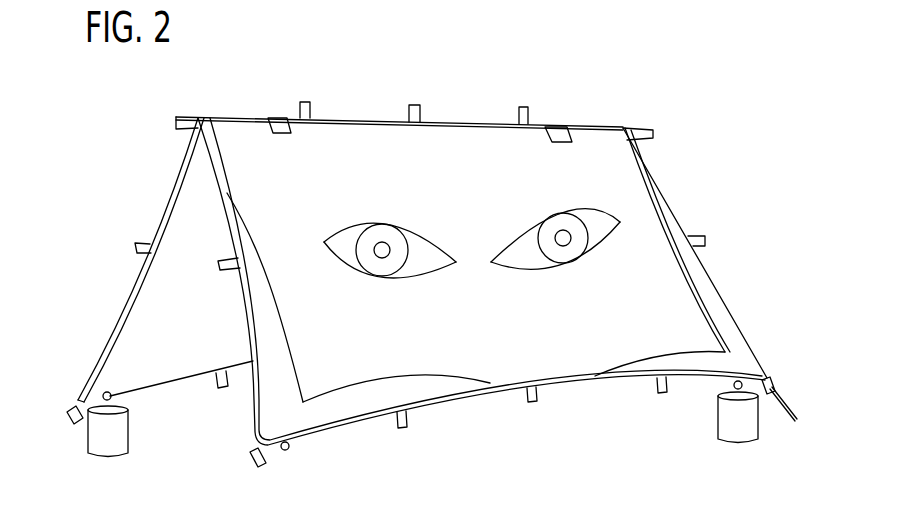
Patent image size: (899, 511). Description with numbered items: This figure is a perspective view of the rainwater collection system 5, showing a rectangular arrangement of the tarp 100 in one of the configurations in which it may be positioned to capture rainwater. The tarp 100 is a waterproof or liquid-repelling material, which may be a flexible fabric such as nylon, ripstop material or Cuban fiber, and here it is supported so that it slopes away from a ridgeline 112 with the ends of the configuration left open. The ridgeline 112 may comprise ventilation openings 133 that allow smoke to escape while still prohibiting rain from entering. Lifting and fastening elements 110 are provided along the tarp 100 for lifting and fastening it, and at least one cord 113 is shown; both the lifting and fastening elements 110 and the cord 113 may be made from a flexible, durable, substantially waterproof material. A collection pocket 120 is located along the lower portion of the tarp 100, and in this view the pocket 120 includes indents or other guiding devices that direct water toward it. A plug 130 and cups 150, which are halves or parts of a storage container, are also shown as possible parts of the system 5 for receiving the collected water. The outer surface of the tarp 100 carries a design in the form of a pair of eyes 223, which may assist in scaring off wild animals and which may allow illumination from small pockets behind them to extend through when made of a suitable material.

The rainwater collection system 5 is at (444, 88).
The tarp 100 is at (221, 115).
The lifting and fastening elements 110 is at (525, 106).
The ridgeline 112 is at (598, 126).
The cord 113 is at (787, 404).
The collection pocket 120 is at (276, 357).
The plug 130 is at (109, 393).
The ventilation openings 133 is at (279, 120).
The cups of a storage container 150 is at (131, 438).
The pair of eyes 223 is at (403, 216).